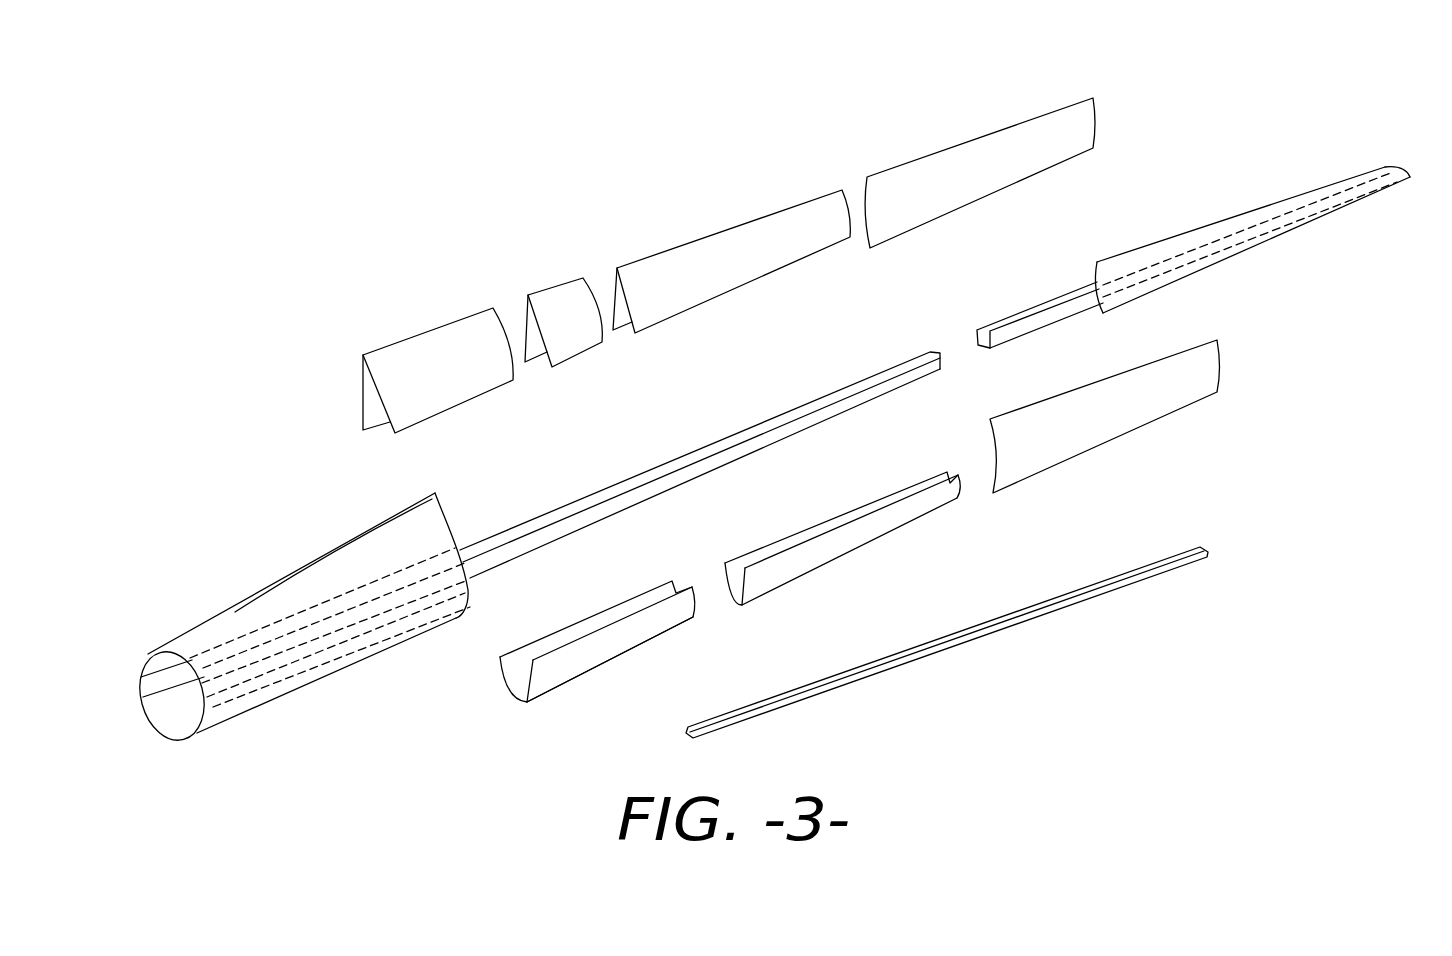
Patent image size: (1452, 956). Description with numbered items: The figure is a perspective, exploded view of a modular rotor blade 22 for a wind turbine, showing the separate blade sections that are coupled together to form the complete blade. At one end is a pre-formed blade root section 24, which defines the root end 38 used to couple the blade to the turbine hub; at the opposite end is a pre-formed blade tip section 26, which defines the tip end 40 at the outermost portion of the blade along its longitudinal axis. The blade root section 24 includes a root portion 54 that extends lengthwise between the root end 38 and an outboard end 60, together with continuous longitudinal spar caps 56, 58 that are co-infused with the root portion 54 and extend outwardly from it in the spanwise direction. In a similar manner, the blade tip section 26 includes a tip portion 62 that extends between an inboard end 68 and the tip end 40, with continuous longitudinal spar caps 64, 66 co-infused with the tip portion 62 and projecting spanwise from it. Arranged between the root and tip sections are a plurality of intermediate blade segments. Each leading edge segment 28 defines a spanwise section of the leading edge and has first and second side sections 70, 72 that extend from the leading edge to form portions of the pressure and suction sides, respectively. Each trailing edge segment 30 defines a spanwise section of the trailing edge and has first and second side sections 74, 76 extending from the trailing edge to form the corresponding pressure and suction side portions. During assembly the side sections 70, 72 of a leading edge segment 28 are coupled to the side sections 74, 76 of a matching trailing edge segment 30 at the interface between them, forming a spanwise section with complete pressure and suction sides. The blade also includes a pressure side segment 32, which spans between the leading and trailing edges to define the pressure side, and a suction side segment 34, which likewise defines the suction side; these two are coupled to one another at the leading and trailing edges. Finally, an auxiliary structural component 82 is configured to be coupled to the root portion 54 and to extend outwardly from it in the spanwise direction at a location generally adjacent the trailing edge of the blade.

The modular rotor blade 22 is at (1160, 111).
The blade root section 24 is at (292, 697).
The blade tip section 26 is at (1262, 247).
The leading edge segment 28 is at (612, 668).
The trailing edge segment 30 is at (436, 325).
The pressure side segment 32 is at (975, 138).
The suction side segment 34 is at (1113, 440).
The root end 38 is at (180, 738).
The tip end 40 is at (1410, 177).
The root portion 54 is at (352, 558).
The spar cap 56 is at (512, 532).
The spar cap 58 is at (732, 450).
The outboard end 60 is at (467, 590).
The tip portion 62 is at (1225, 225).
The spar cap 64 is at (977, 320).
The spar cap 66 is at (1032, 333).
The inboard end 68 is at (1095, 270).
The first side section 70 is at (500, 667).
The second side section 72 is at (547, 677).
The first side section 74 is at (377, 413).
The second side section 76 is at (437, 400).
The auxiliary structural component 82 is at (1045, 613).